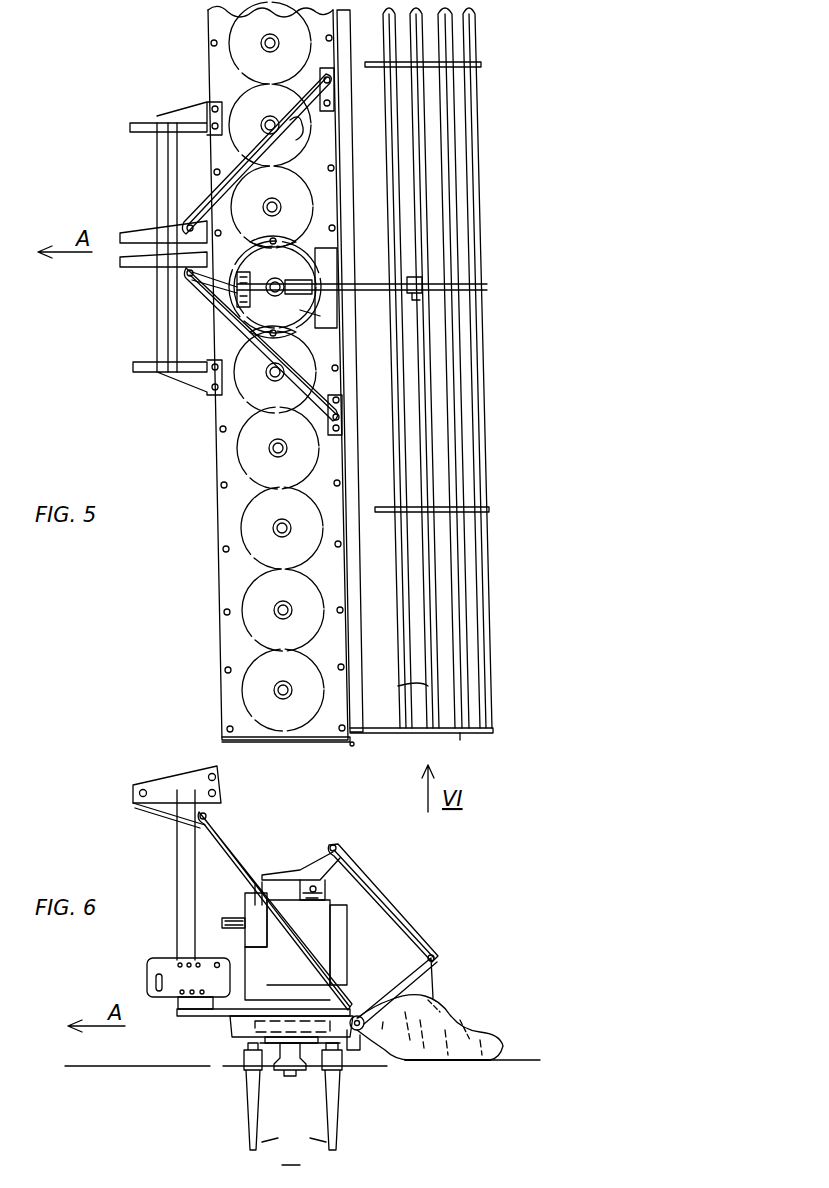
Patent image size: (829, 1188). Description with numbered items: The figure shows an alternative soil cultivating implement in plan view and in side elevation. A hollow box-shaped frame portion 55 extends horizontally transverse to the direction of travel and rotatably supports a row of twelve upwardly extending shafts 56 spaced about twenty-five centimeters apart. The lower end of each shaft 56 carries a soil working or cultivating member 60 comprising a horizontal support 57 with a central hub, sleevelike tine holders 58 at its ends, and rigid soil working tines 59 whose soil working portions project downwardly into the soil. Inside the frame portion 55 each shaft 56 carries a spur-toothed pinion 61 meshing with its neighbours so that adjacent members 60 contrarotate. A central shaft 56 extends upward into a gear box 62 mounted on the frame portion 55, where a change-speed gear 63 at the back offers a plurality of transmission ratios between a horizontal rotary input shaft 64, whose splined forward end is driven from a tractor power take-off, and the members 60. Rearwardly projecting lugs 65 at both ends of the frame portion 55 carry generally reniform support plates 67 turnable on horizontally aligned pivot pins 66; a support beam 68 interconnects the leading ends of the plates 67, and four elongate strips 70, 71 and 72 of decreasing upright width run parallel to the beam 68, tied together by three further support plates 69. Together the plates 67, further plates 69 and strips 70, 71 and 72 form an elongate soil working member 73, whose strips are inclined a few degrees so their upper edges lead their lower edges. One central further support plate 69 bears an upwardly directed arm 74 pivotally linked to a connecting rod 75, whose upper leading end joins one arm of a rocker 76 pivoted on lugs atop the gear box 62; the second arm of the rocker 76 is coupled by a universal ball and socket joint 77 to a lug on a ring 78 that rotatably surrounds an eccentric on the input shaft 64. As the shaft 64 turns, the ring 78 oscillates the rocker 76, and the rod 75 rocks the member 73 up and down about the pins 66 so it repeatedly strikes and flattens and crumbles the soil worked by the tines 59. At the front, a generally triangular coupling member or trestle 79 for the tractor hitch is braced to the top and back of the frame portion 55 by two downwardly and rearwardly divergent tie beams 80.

In FIG. 5, the hollow box-shaped frame portion 55 is at (219, 449).
In FIG. 6, the hollow box-shaped frame portion 55 is at (240, 1030).
In FIG. 5, the shafts 56 is at (284, 520).
In FIG. 6, the shafts 56 is at (290, 1078).
In FIG. 6, the substantially horizontal support 57 is at (258, 1082).
In FIG. 6, the sleevelike tine holders 58 is at (342, 1070).
In FIG. 6, the rigid soil working tines 59 is at (326, 1142).
In FIG. 6, the soil working or cultivating member 60 is at (295, 1153).
In FIG. 5, the pinion 61 is at (252, 585).
In FIG. 6, the pinion 61 is at (248, 1050).
In FIG. 5, the gear box 62 is at (300, 250).
In FIG. 6, the gear box 62 is at (320, 934).
In FIG. 5, the change-speed gear 63 is at (337, 255).
In FIG. 6, the change-speed gear 63 is at (340, 962).
In FIG. 5, the rotary input shaft 64 is at (232, 290).
In FIG. 6, the rotary input shaft 64 is at (228, 930).
In FIG. 5, the rearwardly projecting lugs 65 is at (352, 742).
In FIG. 6, the rearwardly projecting lugs 65 is at (340, 1050).
In FIG. 5, the pivot pins 66 is at (352, 748).
In FIG. 6, the pivot pins 66 is at (360, 1014).
In FIG. 5, the support plates 67 is at (495, 731).
In FIG. 6, the support plates 67 is at (425, 1062).
In FIG. 5, the support beam 68 is at (372, 612).
In FIG. 5, the further support plates 69 is at (482, 65).
In FIG. 5, the leading strips 70 is at (396, 688).
In FIG. 6, the leading strips 70 is at (448, 1004).
In FIG. 5, the rear strip 71 is at (462, 742).
In FIG. 6, the rear strip 71 is at (470, 1030).
In FIG. 5, the rearmost strip 72 is at (484, 672).
In FIG. 6, the rearmost strip 72 is at (506, 1045).
In FIG. 5, the elongate soil working member 73 is at (457, 368).
In FIG. 6, the elongate soil working member 73 is at (466, 1072).
In FIG. 5, the upwardly directed arm 74 is at (412, 300).
In FIG. 6, the upwardly directed arm 74 is at (432, 978).
In FIG. 5, the connecting rod 75 is at (370, 280).
In FIG. 6, the connecting rod 75 is at (400, 918).
In FIG. 5, the rocker 76 is at (320, 330).
In FIG. 6, the rocker 76 is at (312, 864).
In FIG. 5, the universal ball and socket joint 77 is at (250, 280).
In FIG. 6, the universal ball and socket joint 77 is at (258, 880).
In FIG. 5, the ring 78 is at (242, 330).
In FIG. 6, the ring 78 is at (250, 910).
In FIG. 5, the coupling member or trestle 79 is at (156, 170).
In FIG. 6, the coupling member or trestle 79 is at (186, 927).
In FIG. 5, the tie beams 80 is at (312, 146).
In FIG. 6, the tie beams 80 is at (302, 968).